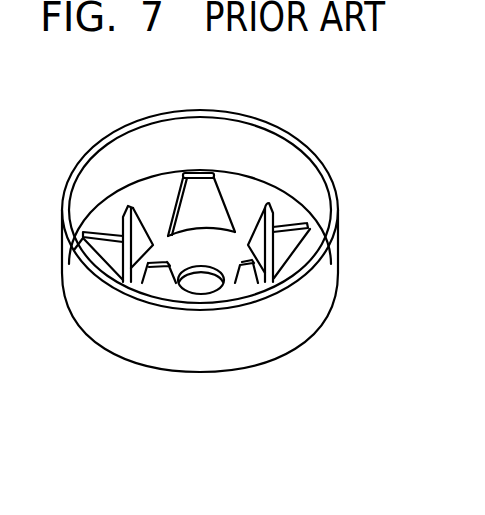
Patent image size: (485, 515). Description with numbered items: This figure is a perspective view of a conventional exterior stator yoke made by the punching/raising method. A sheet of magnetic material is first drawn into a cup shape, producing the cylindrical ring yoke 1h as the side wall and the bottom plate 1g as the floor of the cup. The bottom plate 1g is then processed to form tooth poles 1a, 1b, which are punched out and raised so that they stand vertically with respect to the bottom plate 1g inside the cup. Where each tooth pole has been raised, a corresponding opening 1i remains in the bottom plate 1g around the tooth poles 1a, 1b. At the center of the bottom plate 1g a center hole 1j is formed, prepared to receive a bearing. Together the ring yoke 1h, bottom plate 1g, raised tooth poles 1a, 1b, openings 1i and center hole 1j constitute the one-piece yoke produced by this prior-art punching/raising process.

The tooth pole 1a is at (196, 186).
The tooth pole 1b is at (197, 210).
The bottom plate 1g is at (97, 226).
The ring yoke 1h is at (192, 128).
The opening 1i is at (290, 247).
The center hole 1j is at (205, 285).